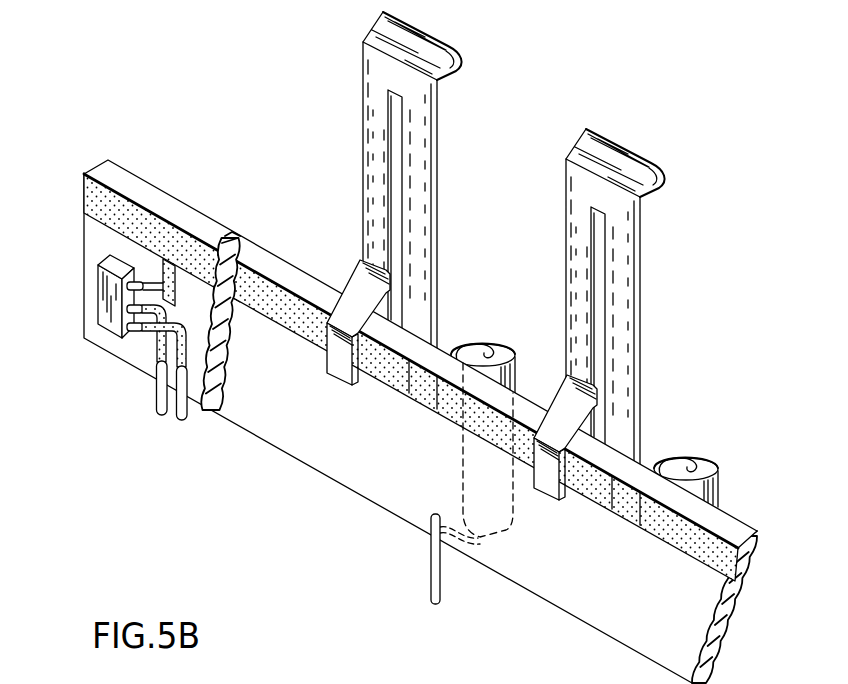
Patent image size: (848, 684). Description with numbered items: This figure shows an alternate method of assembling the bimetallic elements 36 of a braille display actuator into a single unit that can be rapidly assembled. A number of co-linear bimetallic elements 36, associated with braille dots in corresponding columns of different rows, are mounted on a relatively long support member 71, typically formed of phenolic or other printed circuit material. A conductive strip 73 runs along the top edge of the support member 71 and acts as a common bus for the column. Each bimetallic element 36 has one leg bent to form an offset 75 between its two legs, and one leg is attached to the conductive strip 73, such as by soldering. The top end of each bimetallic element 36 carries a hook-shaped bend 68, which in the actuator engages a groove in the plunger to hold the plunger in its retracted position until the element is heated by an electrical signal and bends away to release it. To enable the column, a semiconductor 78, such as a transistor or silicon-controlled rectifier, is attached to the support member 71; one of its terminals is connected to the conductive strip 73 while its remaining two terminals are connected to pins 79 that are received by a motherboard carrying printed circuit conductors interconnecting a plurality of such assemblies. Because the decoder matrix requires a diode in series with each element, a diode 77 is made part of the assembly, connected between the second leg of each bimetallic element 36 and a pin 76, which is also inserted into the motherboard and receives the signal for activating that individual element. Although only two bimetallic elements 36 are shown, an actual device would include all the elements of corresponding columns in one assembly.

The bimetallic element 36 is at (433, 245).
The hook-shaped bend 68 is at (382, 14).
The support member 71 is at (524, 578).
The conductive strip 73 is at (98, 205).
The offset 75 is at (362, 286).
The pins 76 is at (432, 573).
The diode 77 is at (514, 364).
The semiconductor 78 is at (100, 287).
The pins 79 is at (166, 371).